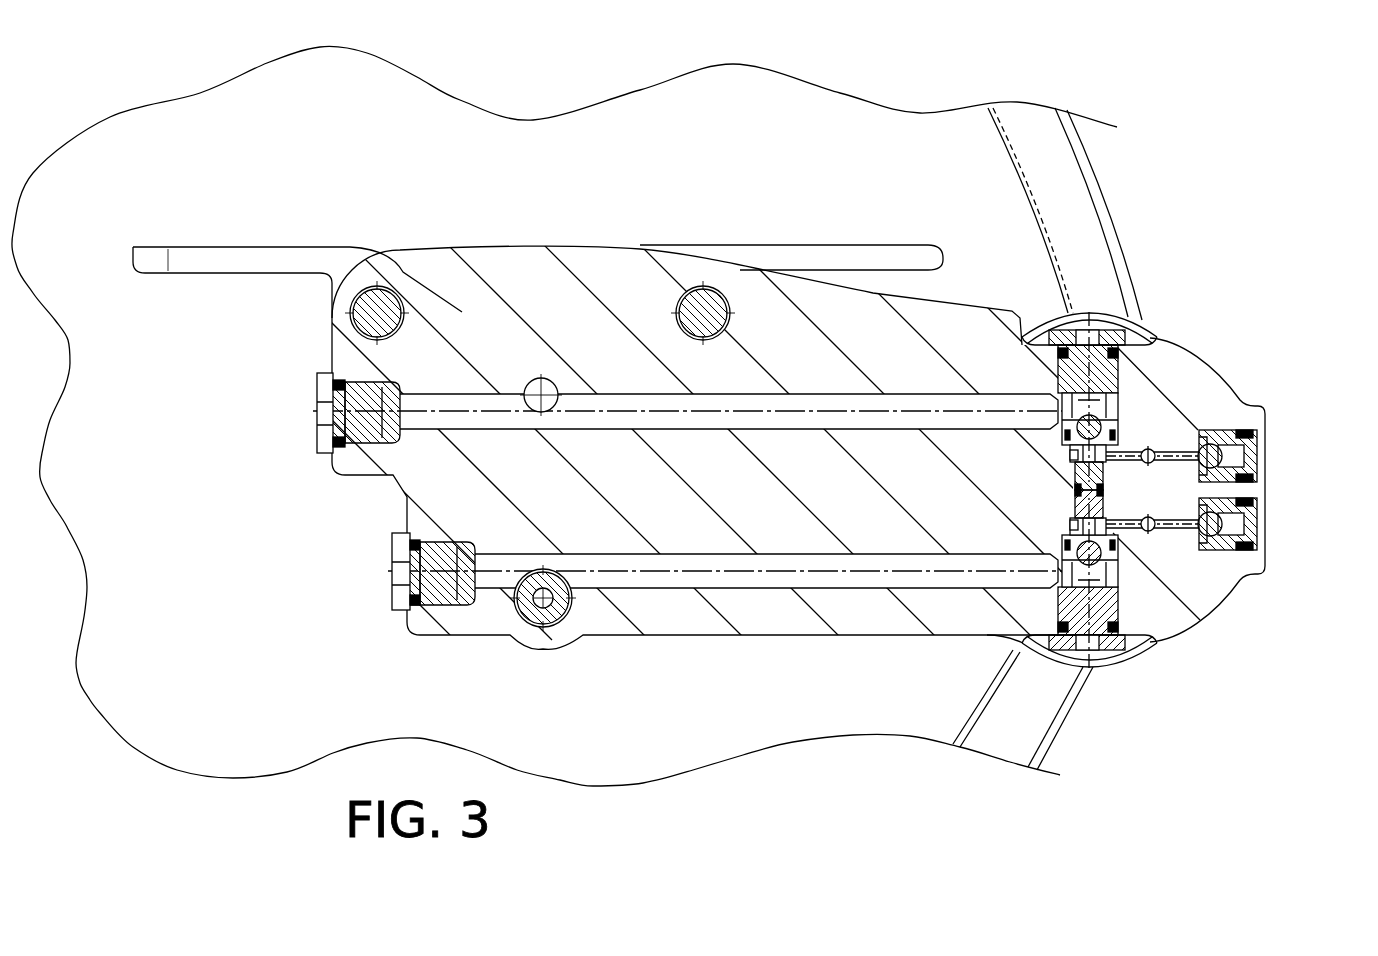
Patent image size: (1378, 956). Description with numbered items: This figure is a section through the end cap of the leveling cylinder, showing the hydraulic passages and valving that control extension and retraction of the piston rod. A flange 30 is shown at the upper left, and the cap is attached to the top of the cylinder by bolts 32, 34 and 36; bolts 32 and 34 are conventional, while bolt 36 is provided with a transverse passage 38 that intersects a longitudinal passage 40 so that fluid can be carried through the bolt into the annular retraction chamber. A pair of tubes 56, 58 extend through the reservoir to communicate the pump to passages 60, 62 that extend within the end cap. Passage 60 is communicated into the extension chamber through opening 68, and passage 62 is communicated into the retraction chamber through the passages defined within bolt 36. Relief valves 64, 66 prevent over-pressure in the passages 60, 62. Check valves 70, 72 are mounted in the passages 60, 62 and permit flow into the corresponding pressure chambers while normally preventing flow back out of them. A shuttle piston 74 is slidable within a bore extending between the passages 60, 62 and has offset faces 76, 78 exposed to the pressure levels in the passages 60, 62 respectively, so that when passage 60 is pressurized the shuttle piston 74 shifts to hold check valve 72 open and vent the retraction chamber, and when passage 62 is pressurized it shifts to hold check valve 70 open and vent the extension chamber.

The mounting flange 30 is at (275, 203).
The bolt 32 is at (387, 313).
The bolt 34 is at (713, 307).
The opening 68 is at (547, 392).
The longitudinal passage 40 is at (551, 587).
The bolt 36 is at (542, 630).
The transverse passage 38 is at (555, 602).
The passage 60 is at (920, 412).
The passage 62 is at (920, 575).
The check valve 70 is at (1118, 437).
The check valve 72 is at (1112, 577).
The shuttle piston 74 is at (1110, 477).
The tube 56 is at (1148, 456).
The tube 58 is at (1150, 532).
The relief valve 64 is at (1240, 460).
The relief valve 66 is at (1240, 527).
The offset face 76 is at (1077, 460).
The offset face 78 is at (1067, 532).